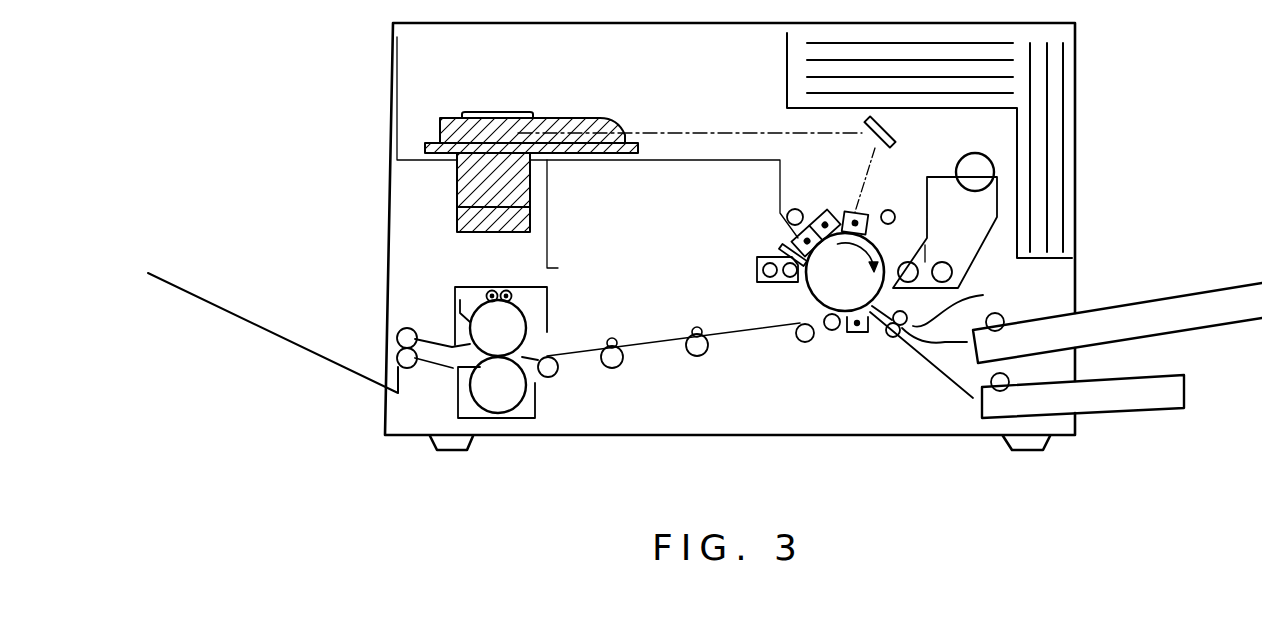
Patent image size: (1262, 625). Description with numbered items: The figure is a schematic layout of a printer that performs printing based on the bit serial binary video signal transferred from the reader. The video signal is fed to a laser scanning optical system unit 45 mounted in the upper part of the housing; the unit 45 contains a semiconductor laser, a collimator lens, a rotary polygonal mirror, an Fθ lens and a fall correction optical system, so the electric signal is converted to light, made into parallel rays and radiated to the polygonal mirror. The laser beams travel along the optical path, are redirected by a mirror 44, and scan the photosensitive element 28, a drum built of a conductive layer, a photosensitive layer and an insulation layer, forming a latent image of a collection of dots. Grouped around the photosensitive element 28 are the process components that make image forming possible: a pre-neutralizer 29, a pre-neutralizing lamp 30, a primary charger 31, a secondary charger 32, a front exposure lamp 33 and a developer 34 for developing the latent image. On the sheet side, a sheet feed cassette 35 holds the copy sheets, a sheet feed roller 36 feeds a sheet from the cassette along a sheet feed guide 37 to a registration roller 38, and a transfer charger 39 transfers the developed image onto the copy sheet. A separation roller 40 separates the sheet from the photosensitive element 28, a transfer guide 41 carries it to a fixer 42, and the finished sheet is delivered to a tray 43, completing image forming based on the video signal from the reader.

The photosensitive element 28 is at (812, 292).
The pre-neutralizer 29 is at (808, 230).
The pre-neutralizing lamp 30 is at (788, 216).
The primary charger 31 is at (837, 216).
The secondary charger 32 is at (860, 216).
The front exposure lamp 33 is at (893, 212).
The developer 34 is at (962, 248).
The sheet feed cassette 35 is at (1045, 316).
The sheet feed roller 36 is at (1002, 316).
The sheet feed guide 37 is at (938, 348).
The registration roller 38 is at (895, 338).
The transfer charger 39 is at (857, 334).
The separation roller 40 is at (827, 331).
The transfer guide 41 is at (727, 334).
The fixer 42 is at (548, 310).
The tray 43 is at (270, 333).
The mirror 44 is at (895, 132).
The laser scanning optical system unit 45 is at (612, 117).